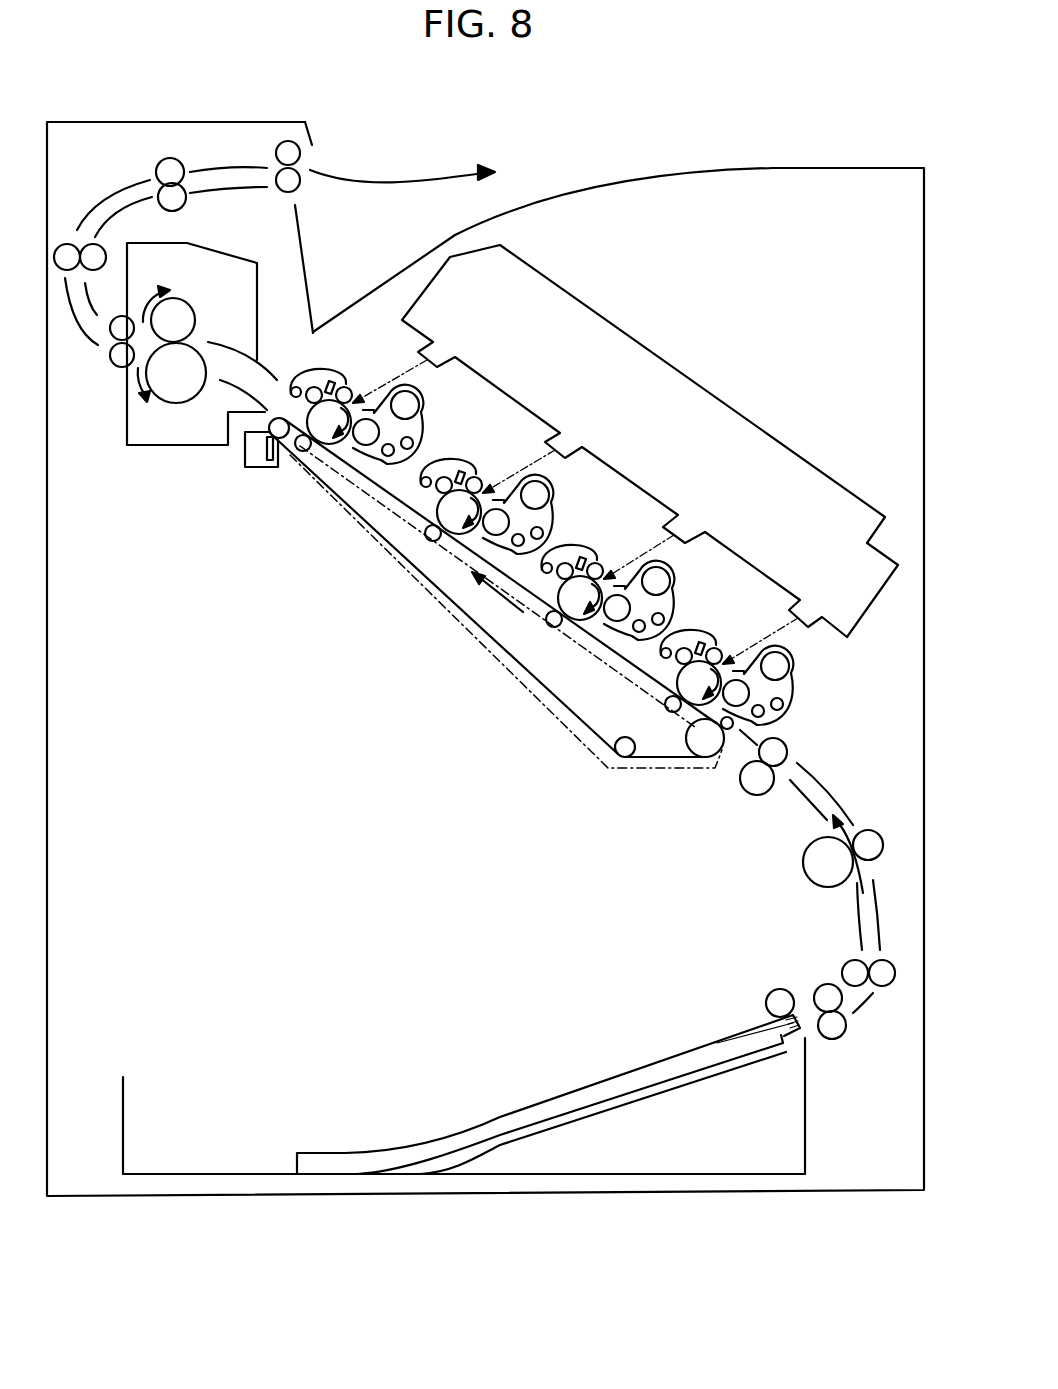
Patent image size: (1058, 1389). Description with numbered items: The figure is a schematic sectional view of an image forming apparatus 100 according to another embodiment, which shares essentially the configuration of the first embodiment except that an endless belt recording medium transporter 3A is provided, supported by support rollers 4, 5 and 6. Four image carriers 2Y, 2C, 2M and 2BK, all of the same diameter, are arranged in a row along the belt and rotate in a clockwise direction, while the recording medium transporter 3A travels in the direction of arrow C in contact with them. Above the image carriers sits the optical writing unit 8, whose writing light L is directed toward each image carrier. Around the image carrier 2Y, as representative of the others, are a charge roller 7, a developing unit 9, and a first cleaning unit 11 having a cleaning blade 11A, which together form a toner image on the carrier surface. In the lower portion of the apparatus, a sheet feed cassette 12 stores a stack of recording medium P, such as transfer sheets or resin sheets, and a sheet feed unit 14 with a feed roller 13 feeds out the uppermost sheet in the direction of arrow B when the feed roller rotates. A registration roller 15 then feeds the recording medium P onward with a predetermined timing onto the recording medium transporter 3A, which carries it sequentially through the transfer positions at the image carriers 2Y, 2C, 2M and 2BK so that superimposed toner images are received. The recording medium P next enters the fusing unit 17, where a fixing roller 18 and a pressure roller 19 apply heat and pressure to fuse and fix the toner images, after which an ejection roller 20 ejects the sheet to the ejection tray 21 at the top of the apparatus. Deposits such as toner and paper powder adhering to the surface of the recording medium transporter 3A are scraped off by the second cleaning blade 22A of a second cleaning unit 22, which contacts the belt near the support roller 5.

The image forming apparatus 100 is at (772, 167).
The ejection tray 21 is at (553, 181).
The ejection roller 20 is at (301, 153).
The fusing unit 17 is at (236, 243).
The fixing roller 18 is at (197, 318).
The pressure roller 19 is at (177, 404).
The support roller 5 is at (274, 418).
The second cleaning unit 22 is at (270, 468).
The second cleaning blade 22A is at (260, 462).
The recording medium transporter 3A is at (523, 680).
The travel direction of recording medium transporter C is at (497, 599).
The support roller 4 is at (710, 758).
The support roller 6 is at (633, 759).
The image carrier 2BK is at (305, 452).
The image carrier 2M is at (427, 527).
The image carrier 2C is at (572, 620).
The image carrier 2Y is at (669, 700).
The developing unit 9 is at (794, 702).
The first cleaning unit 11 is at (688, 637).
The cleaning blade 11A is at (712, 636).
The charge roller 7 is at (731, 648).
The optical writing unit 8 is at (727, 403).
The laser beam L is at (790, 637).
The registration roller 15 is at (763, 795).
The feed direction of recording medium B is at (870, 862).
The feed roller 13 is at (772, 990).
The sheet feed cassette 12 is at (806, 1105).
The sheet feed unit 14 is at (624, 1063).
The recording medium P is at (553, 1097).